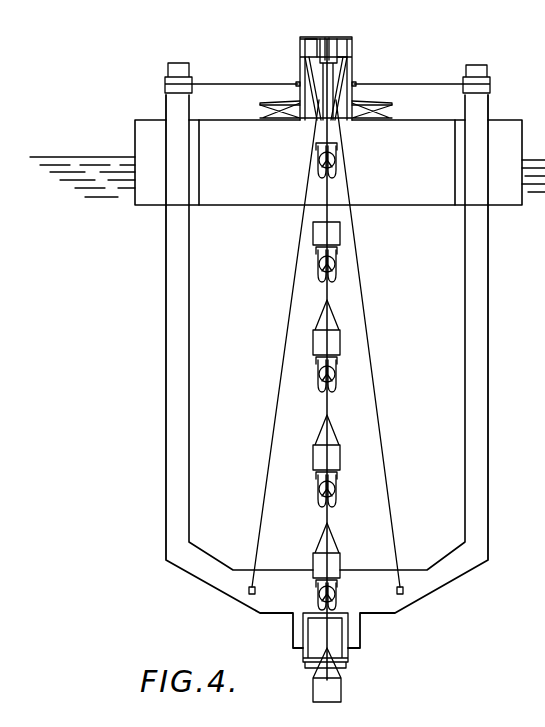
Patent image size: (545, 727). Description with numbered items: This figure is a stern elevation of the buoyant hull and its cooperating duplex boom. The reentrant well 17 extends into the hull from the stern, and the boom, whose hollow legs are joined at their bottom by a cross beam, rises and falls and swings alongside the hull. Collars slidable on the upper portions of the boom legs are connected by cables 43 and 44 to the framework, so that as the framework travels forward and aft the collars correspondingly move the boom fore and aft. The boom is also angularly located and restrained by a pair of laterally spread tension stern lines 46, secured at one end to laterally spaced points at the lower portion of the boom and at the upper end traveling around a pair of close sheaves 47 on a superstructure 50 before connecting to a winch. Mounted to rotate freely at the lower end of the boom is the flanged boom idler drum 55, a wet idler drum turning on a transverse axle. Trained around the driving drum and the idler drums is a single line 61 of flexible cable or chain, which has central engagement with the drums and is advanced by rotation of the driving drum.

The reentrant well 17 is at (349, 148).
The cable 43 is at (381, 84).
The cable 44 is at (213, 84).
The tension stern lines 46 is at (277, 377).
The close sheaves 47 is at (326, 38).
The superstructure 50 is at (298, 38).
The flanged boom idler drum 55 is at (345, 664).
The line 61 is at (325, 395).